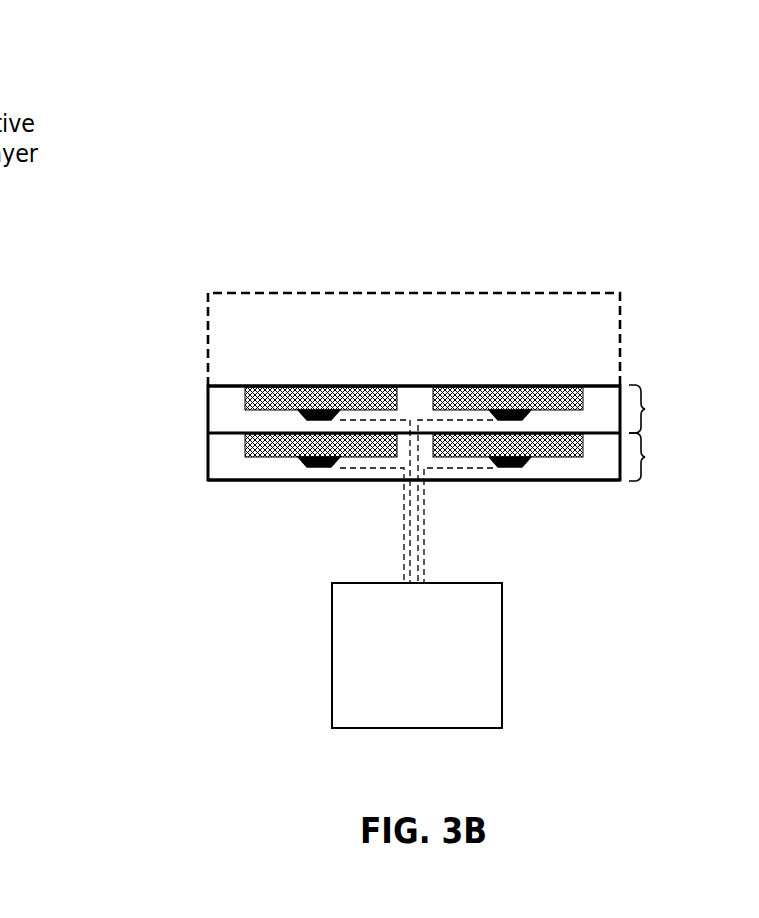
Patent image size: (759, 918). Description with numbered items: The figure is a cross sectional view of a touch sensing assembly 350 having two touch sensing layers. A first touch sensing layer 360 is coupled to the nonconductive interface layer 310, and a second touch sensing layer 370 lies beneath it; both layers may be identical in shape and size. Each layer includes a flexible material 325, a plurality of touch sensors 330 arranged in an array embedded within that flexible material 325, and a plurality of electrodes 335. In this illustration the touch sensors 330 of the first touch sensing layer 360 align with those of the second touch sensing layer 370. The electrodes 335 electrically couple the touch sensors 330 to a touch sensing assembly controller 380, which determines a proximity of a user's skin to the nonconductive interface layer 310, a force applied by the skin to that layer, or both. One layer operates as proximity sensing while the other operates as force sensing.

The touch sensing assembly 350 is at (436, 108).
The nonconductive interface layer 310 is at (227, 317).
The flexible material 325 is at (227, 408).
The touch sensors 330 is at (252, 397).
The electrodes 335 is at (318, 466).
The first touch sensing layer 360 is at (645, 409).
The second touch sensing layer 370 is at (645, 457).
The touch sensing assembly controller 380 is at (438, 703).